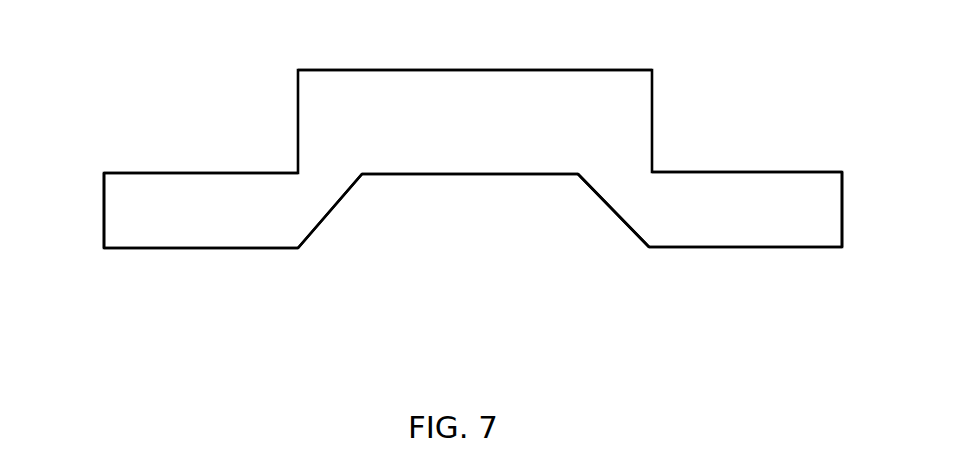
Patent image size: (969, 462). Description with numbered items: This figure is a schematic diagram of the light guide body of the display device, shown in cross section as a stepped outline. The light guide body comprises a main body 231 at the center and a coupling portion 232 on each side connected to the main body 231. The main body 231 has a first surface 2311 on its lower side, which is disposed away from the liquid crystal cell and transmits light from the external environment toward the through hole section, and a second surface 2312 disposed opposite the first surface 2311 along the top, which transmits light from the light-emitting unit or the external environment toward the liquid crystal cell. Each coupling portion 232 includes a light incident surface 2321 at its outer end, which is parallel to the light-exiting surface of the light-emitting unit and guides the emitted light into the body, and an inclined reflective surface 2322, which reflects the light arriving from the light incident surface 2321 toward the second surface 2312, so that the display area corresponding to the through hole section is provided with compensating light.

The main body 231 is at (408, 118).
The second surface 2312 is at (527, 70).
The first surface 2311 is at (469, 174).
The reflective surface 2322 is at (330, 212).
The coupling portion 232 is at (192, 208).
The light incident surface 2321 is at (104, 208).